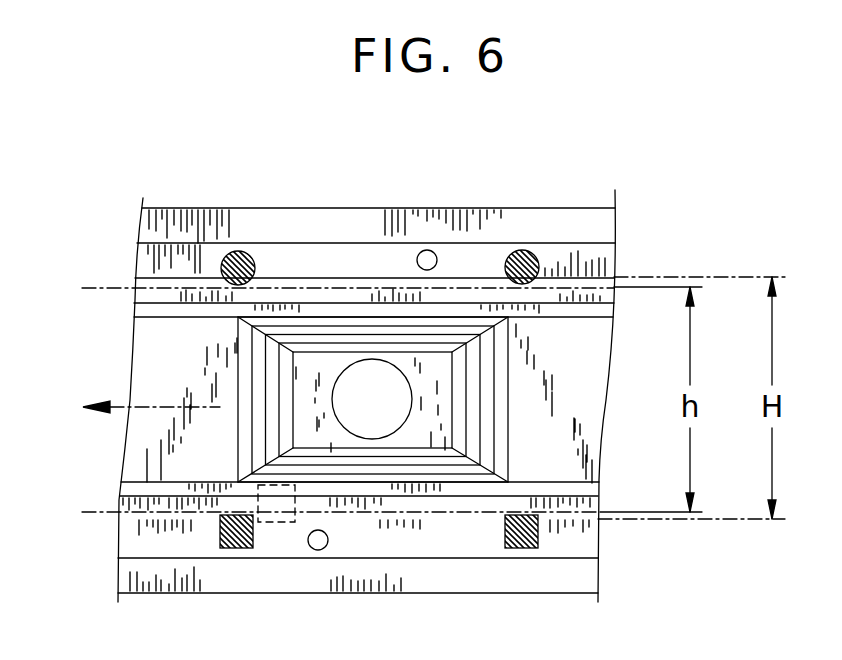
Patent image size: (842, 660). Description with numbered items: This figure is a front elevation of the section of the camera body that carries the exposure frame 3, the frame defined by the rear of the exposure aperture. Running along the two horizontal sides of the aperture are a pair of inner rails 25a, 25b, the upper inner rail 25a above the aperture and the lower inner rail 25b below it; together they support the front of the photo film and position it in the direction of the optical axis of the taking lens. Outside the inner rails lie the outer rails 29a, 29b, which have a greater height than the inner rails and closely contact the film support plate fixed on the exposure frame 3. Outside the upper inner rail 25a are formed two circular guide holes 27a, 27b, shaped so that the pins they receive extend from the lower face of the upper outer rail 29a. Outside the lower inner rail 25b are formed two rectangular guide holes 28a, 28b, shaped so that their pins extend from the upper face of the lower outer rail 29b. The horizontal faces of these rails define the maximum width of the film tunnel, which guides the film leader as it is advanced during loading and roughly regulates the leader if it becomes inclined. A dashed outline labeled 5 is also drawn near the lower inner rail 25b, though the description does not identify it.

The exposure frame 3 is at (142, 362).
The detection position 5 is at (280, 522).
The upper inner rail 25a is at (148, 311).
The lower inner rail 25b is at (146, 490).
The circular guide hole 27a is at (522, 250).
The circular guide hole 27b is at (240, 251).
The rectangular guide hole 28a is at (519, 548).
The rectangular guide hole 28b is at (237, 548).
The upper outer rail 29a is at (348, 243).
The lower outer rail 29b is at (405, 548).